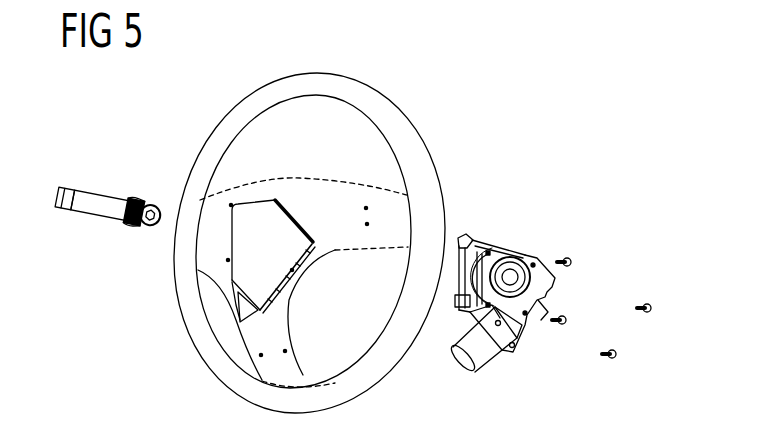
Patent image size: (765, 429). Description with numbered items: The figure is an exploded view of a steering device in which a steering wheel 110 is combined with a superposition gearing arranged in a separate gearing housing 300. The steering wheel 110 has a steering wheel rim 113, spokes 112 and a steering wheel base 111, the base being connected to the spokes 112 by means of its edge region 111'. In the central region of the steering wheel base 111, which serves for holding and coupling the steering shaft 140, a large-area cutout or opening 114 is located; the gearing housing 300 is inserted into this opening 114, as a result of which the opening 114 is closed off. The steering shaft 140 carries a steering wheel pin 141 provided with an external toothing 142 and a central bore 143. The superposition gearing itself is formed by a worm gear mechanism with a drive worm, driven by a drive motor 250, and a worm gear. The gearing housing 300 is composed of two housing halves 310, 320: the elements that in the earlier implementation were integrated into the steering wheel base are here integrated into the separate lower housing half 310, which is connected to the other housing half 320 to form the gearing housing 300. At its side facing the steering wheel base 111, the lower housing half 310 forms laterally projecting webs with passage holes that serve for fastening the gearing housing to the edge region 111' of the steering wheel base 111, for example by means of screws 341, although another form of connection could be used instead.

The steering wheel 110 is at (405, 102).
The steering wheel rim 113 is at (422, 152).
The opening 114 is at (262, 215).
The steering wheel base 111 is at (300, 287).
The edge region 111' is at (276, 328).
The spokes 112 is at (357, 240).
The steering shaft 140 is at (60, 186).
The steering wheel pin 141 is at (103, 192).
The external toothing 142 is at (133, 228).
The central bore 143 is at (153, 206).
The gearing housing 300 is at (540, 248).
The housing half 310 is at (492, 240).
The housing half 320 is at (553, 278).
The screws 341 is at (614, 362).
The drive motor 250 is at (483, 352).